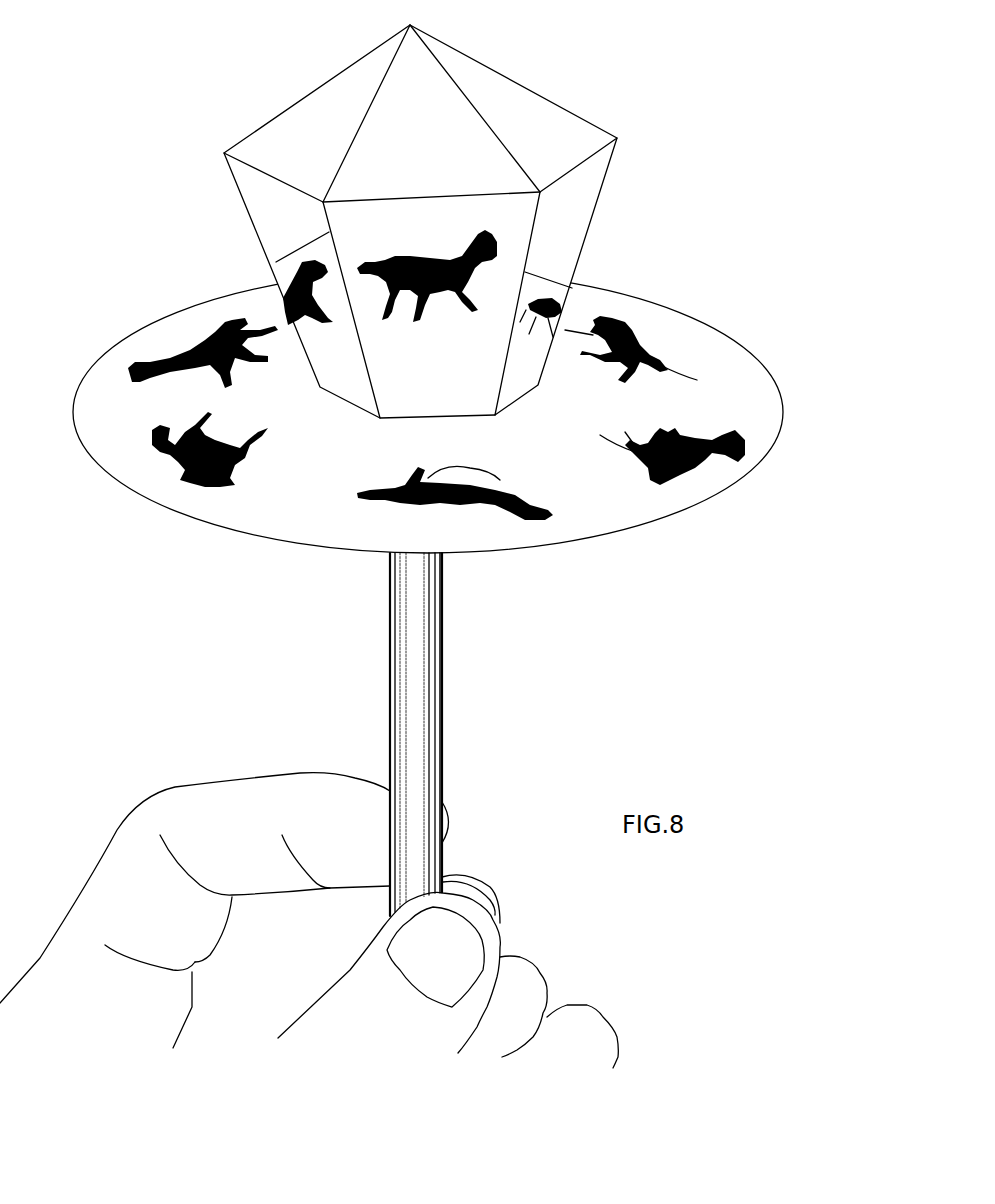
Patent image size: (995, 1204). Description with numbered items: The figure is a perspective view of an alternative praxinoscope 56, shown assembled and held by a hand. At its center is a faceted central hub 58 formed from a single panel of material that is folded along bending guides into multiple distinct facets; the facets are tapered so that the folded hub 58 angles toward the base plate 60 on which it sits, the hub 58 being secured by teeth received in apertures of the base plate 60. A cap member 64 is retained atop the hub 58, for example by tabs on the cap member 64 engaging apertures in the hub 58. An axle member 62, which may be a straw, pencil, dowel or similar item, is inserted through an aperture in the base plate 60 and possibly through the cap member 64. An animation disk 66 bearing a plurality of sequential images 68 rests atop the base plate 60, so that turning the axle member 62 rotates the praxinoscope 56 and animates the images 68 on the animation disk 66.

The praxinoscope 56 is at (636, 106).
The faceted central hub 58 is at (445, 374).
The base plate 60 is at (358, 553).
The axle member 62 is at (428, 686).
The cap member 64 is at (442, 154).
The animation disk 66 is at (324, 476).
The sequential images 68 is at (466, 503).